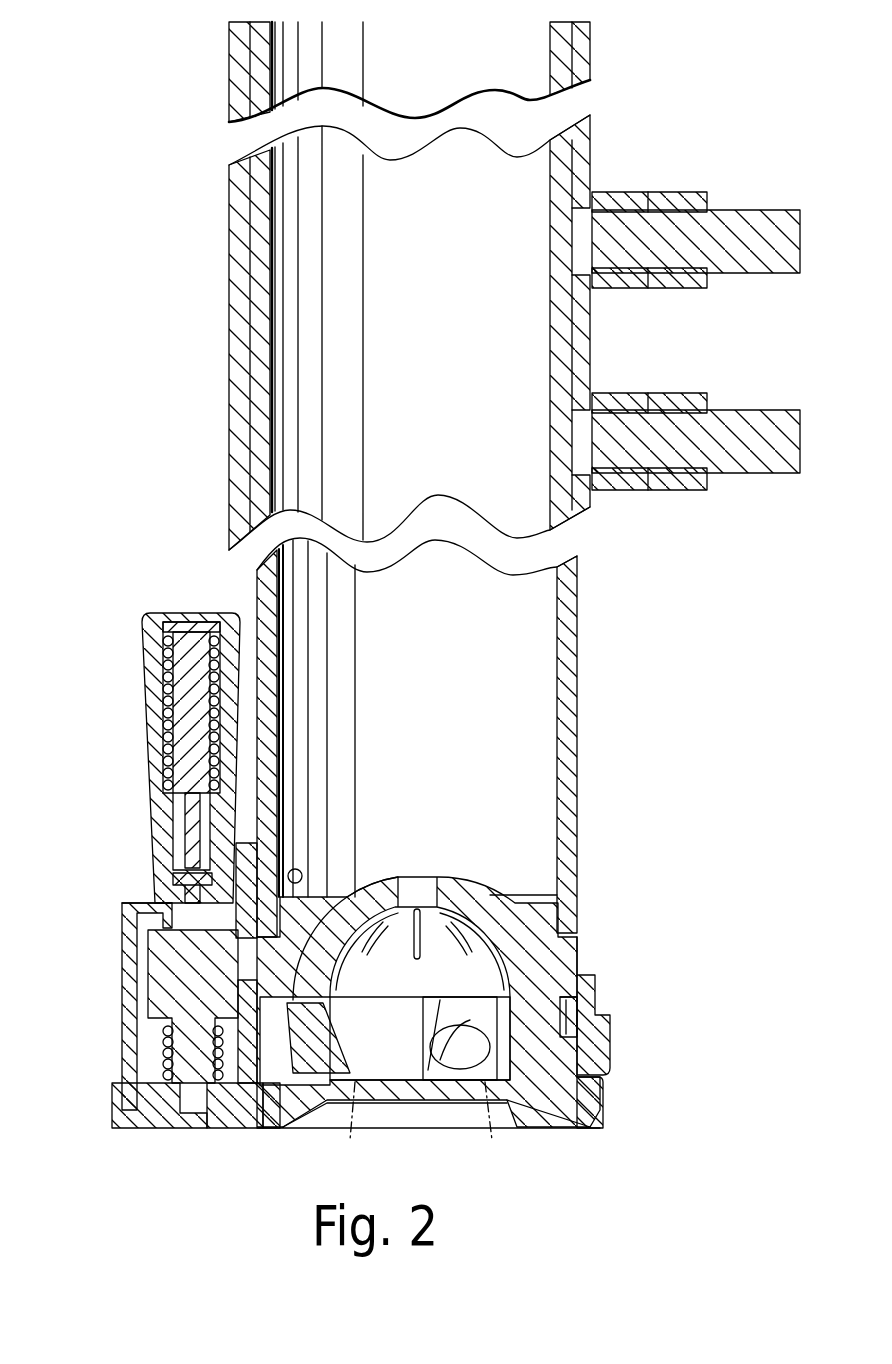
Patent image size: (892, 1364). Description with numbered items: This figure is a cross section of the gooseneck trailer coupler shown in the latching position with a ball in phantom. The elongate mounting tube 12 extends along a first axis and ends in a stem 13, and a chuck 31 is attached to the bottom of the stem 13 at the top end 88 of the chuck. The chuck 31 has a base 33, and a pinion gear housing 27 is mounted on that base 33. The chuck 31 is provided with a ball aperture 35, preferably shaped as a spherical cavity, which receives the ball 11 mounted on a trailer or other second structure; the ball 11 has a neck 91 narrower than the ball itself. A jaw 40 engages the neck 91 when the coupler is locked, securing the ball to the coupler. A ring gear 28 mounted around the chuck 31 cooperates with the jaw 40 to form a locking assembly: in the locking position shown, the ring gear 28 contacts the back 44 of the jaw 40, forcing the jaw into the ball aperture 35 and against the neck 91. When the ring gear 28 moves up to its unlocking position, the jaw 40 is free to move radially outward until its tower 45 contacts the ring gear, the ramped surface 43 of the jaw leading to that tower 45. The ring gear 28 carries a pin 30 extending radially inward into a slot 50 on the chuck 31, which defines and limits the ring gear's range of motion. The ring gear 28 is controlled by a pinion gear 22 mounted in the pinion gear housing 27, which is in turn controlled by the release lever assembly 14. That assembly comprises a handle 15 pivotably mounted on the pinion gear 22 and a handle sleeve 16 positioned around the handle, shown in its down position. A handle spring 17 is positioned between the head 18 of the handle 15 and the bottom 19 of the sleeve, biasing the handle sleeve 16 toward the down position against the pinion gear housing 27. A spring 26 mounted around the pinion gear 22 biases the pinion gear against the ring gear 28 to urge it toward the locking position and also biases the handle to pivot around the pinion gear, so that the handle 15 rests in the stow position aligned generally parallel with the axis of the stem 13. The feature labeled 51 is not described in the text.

The ball 11 is at (503, 900).
The tube 12 is at (235, 410).
The stem 13 is at (582, 847).
The release lever assembly 14 is at (138, 735).
The handle 15 is at (203, 630).
The handle sleeve 16 is at (145, 672).
The handle spring 17 is at (165, 740).
The head 18 is at (167, 620).
The bottom 19 is at (170, 788).
The pinion gear 22 is at (130, 938).
The spring 26 is at (165, 1030).
The pinion gear housing 27 is at (160, 955).
The ring gear 28 is at (252, 1073).
The pin 30 is at (565, 995).
The chuck 31 is at (593, 1088).
The base 33 is at (115, 1095).
The ball aperture 35 is at (387, 1035).
The jaw 40 is at (327, 1073).
The ramped surface 43 is at (277, 1023).
The back 44 is at (257, 1076).
The tower 45 is at (330, 910).
The slot 50 is at (568, 995).
The housing top 51 is at (148, 893).
The top end 88 is at (580, 950).
The neck 91 is at (363, 1108).